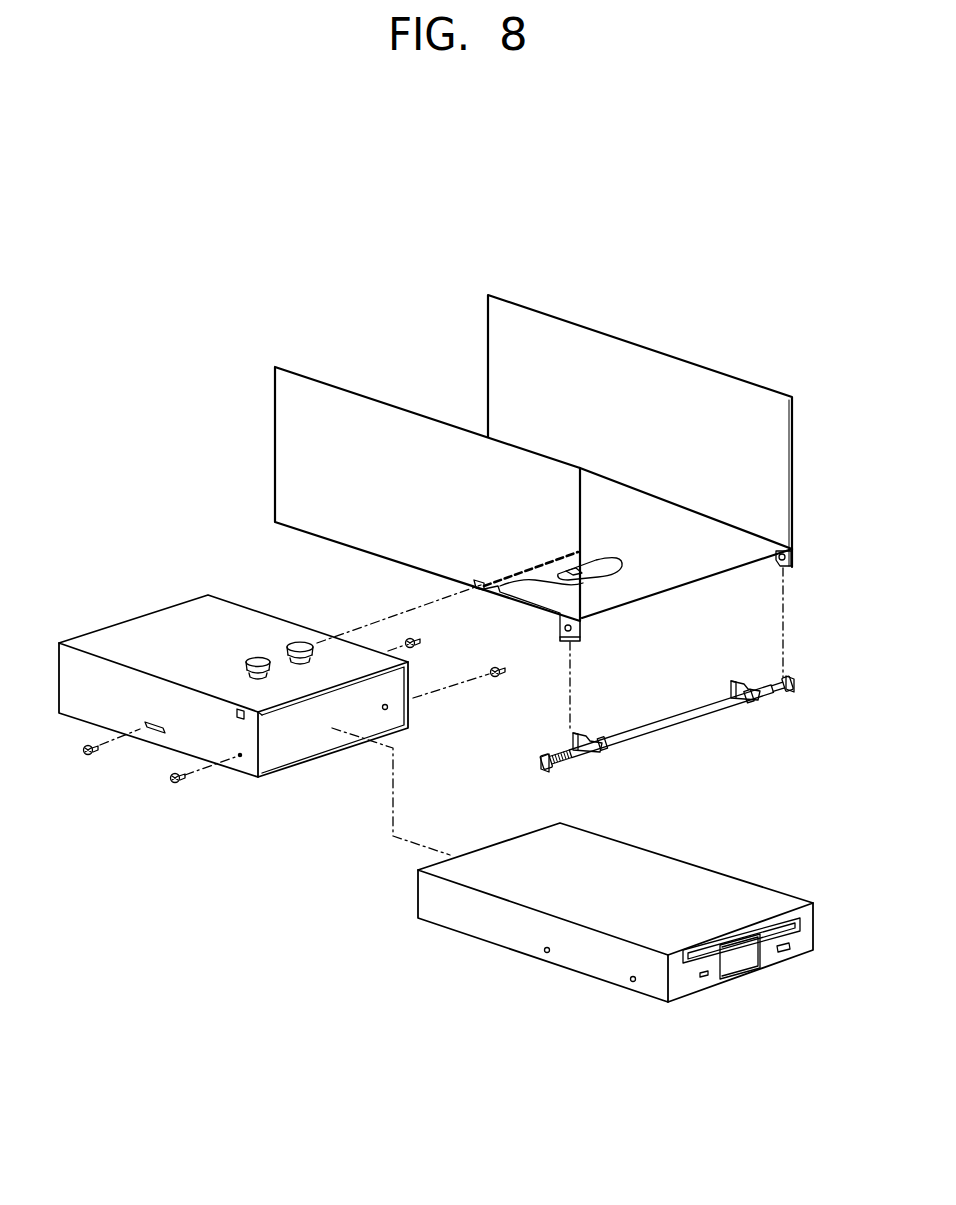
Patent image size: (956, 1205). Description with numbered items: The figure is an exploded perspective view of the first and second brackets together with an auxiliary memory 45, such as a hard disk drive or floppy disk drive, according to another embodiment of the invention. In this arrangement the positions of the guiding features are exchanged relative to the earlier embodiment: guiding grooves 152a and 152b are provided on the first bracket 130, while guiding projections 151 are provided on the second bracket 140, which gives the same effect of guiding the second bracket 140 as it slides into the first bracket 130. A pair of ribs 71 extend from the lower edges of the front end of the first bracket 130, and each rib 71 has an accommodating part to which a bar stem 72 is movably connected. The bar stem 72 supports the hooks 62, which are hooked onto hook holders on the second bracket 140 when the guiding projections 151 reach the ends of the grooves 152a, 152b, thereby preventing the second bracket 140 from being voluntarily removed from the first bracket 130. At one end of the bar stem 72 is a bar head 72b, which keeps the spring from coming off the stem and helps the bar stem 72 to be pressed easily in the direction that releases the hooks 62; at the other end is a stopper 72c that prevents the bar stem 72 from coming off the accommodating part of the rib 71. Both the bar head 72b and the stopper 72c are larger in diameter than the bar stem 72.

The first bracket 130 is at (644, 334).
The guiding groove 152a is at (510, 577).
The guiding groove 152b is at (607, 557).
The rib 71 is at (565, 628).
The second bracket 140 is at (154, 746).
The guiding projections 151 is at (258, 657).
The bar stem 72 is at (670, 734).
The bar head 72b is at (560, 770).
The stopper 72c is at (790, 693).
The hooks 62 is at (575, 733).
The auxiliary memory 45 is at (526, 957).